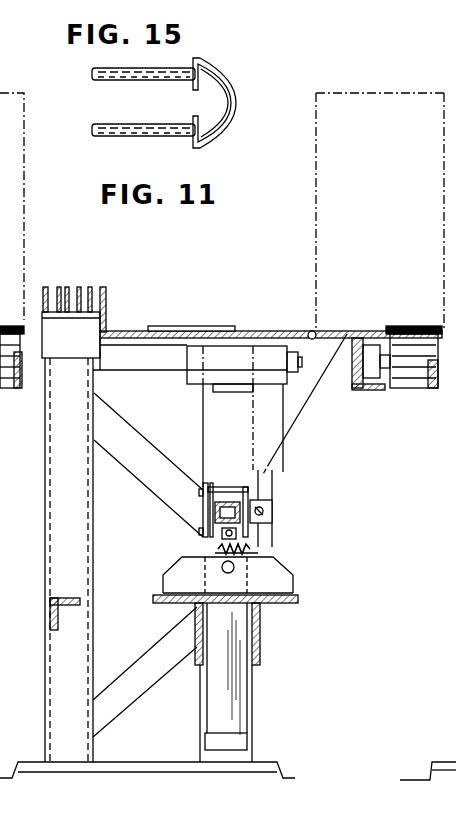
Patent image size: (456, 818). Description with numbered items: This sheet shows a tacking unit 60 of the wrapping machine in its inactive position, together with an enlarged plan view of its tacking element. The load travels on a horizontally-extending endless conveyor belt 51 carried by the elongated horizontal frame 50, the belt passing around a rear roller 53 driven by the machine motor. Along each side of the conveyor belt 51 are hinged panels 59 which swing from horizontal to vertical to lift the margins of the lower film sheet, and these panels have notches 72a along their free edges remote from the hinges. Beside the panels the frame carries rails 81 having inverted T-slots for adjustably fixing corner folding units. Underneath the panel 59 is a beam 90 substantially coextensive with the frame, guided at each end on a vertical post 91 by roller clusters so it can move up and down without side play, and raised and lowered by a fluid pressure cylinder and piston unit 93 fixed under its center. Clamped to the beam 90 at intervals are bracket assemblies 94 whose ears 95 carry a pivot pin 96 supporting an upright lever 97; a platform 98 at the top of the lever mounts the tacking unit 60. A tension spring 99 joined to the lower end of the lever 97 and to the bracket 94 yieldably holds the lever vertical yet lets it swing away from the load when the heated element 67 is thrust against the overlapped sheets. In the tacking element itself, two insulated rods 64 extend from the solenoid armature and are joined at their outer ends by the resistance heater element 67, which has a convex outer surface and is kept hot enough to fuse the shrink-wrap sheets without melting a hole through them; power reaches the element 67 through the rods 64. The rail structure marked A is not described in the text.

In FIG. 15, the rods 64 is at (147, 78).
In FIG. 15, the resistance heater element 67 is at (232, 97).
In FIG. 11, the resistance heater element 67 is at (300, 373).
In FIG. 11, the rail A is at (382, 114).
In FIG. 11, the frame 50 is at (42, 437).
In FIG. 11, the conveyor belt 51 is at (426, 330).
In FIG. 11, the rear roller 53 is at (10, 392).
In FIG. 11, the panels 59 is at (236, 330).
In FIG. 11, the notches 72a is at (194, 302).
In FIG. 11, the rails 81 is at (96, 290).
In FIG. 11, the tacking unit 60 is at (190, 388).
In FIG. 11, the platform 98 is at (233, 392).
In FIG. 11, the vertical post 91 is at (206, 441).
In FIG. 11, the upright lever 97 is at (284, 452).
In FIG. 11, the bracket assembly 94 is at (203, 503).
In FIG. 11, the beam 90 is at (212, 514).
In FIG. 11, the ears 95 is at (273, 518).
In FIG. 11, the pivot pin 96 is at (266, 505).
In FIG. 11, the tension spring 99 is at (250, 556).
In FIG. 11, the fluid pressure cylinder and piston unit 93 is at (240, 698).